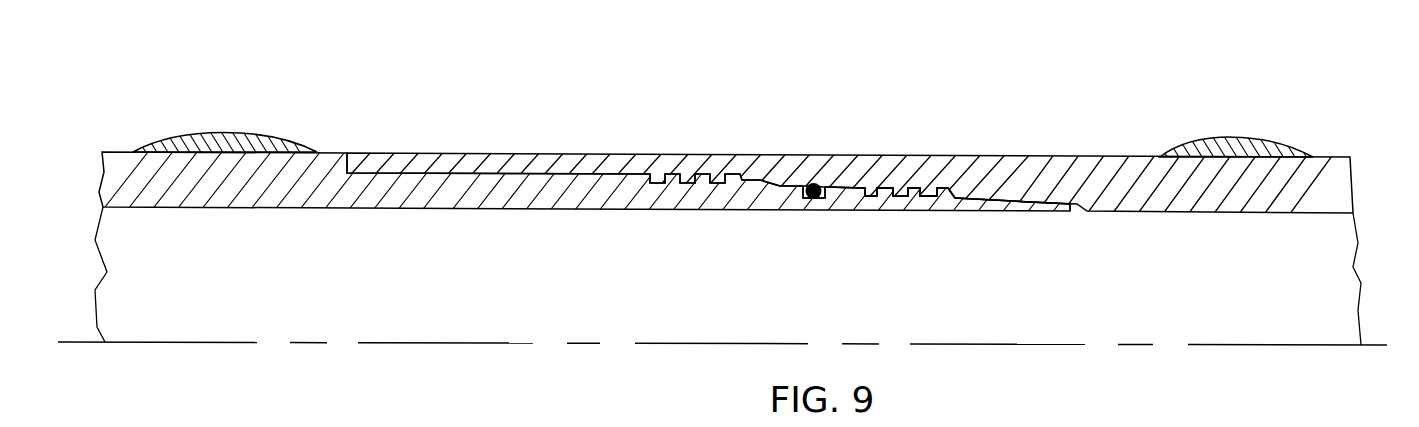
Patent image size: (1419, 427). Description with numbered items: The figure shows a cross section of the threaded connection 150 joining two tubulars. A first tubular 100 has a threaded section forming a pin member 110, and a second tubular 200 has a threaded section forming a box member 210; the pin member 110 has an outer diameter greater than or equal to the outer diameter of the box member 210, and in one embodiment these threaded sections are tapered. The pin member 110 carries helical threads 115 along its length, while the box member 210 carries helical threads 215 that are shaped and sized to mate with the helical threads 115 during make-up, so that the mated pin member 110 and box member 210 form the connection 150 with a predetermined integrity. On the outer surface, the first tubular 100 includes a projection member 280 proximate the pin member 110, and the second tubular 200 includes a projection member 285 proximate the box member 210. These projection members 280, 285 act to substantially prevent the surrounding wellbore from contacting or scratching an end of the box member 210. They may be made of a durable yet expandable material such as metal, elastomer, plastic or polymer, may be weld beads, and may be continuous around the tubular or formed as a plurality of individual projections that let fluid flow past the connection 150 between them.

The first tubular 100 is at (128, 167).
The pin member 110 is at (1030, 203).
The helical threads 115 is at (905, 203).
The threaded connection 150 is at (754, 162).
The second tubular 200 is at (1331, 158).
The box member 210 is at (860, 163).
The helical threads 215 is at (920, 193).
The projection member 280 is at (228, 133).
The projection member 285 is at (1230, 137).